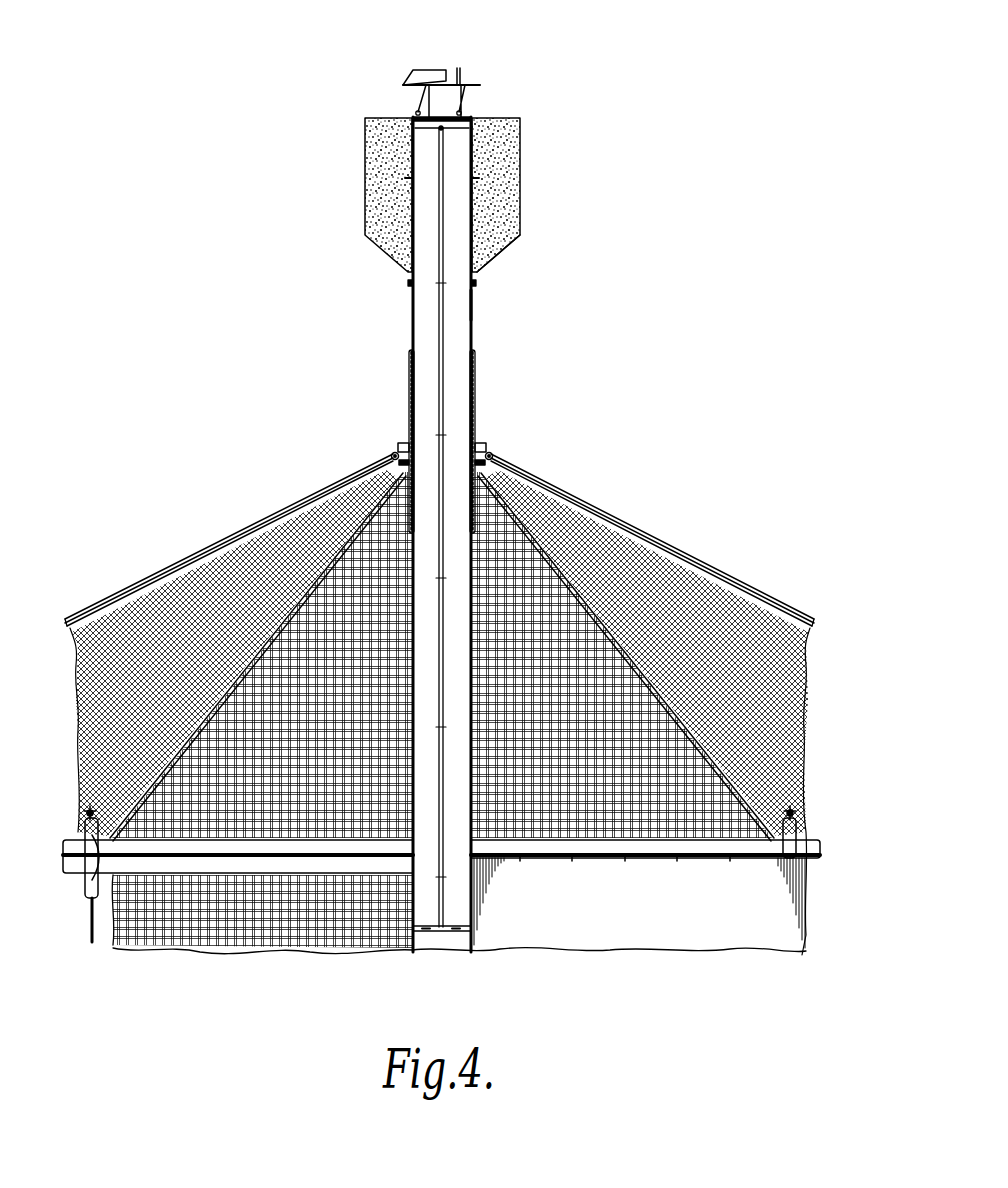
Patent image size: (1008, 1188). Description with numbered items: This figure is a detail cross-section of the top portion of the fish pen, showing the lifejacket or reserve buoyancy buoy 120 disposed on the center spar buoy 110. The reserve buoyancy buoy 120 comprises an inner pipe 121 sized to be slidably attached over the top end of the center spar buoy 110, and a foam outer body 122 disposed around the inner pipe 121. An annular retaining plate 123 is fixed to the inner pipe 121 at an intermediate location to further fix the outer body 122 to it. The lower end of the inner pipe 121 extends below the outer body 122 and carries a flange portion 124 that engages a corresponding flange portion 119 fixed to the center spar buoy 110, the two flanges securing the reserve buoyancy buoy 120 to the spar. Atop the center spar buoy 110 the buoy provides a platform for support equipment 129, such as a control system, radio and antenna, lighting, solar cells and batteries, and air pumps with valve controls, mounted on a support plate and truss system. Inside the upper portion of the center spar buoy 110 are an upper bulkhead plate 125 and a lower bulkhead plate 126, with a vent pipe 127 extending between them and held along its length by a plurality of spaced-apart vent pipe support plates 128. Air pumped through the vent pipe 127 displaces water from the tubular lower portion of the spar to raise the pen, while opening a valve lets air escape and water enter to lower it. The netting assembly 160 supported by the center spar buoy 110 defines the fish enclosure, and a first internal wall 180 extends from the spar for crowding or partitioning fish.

The center spar buoy 110 is at (454, 556).
The flange portion 119 is at (472, 300).
The reserve buoyancy buoy 120 is at (471, 205).
The inner pipe 121 is at (476, 238).
The foam outer body 122 is at (368, 205).
The annular retaining plate 123 is at (478, 172).
The flange portion 124 is at (478, 283).
The upper bulkhead plate 125 is at (464, 142).
The lower bulkhead plate 126 is at (432, 931).
The vent pipe 127 is at (445, 392).
The vent pipe support plates 128 is at (412, 283).
The support equipment 129 is at (484, 63).
The netting assembly 160 is at (610, 546).
The first internal wall 180 is at (690, 950).